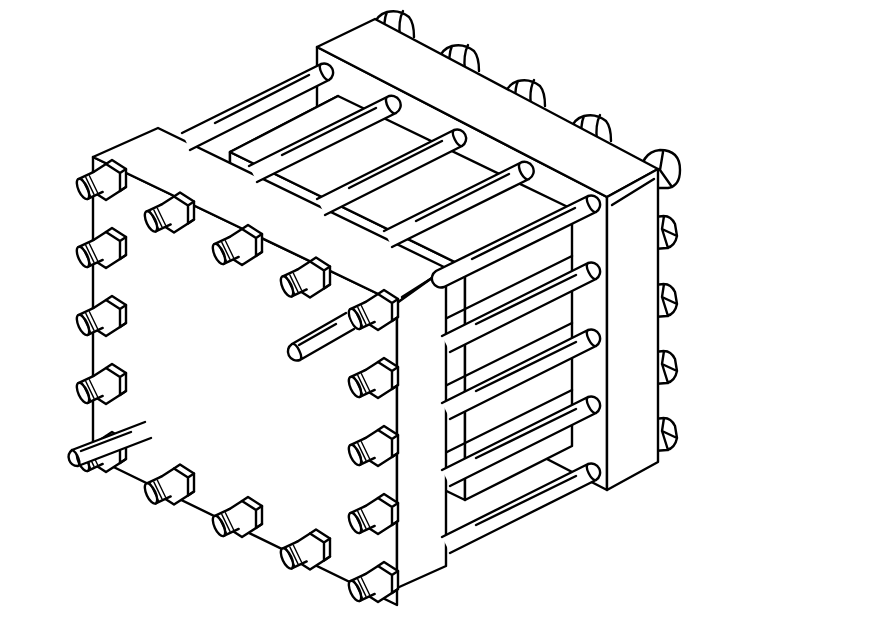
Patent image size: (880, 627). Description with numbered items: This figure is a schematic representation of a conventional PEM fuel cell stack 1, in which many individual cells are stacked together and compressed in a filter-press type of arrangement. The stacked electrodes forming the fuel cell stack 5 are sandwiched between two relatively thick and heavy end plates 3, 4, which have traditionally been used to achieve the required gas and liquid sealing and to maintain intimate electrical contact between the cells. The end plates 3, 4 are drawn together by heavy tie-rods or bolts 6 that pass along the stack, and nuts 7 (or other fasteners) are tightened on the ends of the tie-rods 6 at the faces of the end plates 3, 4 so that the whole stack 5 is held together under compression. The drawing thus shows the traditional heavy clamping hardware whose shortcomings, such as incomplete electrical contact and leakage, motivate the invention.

The fuel cell stack 1 is at (715, 86).
The end plate 3 is at (318, 50).
The end plate 4 is at (123, 147).
The fuel cell stack 5 is at (257, 143).
The tie-rods or bolts 6 is at (248, 94).
The nuts 7 is at (372, 22).